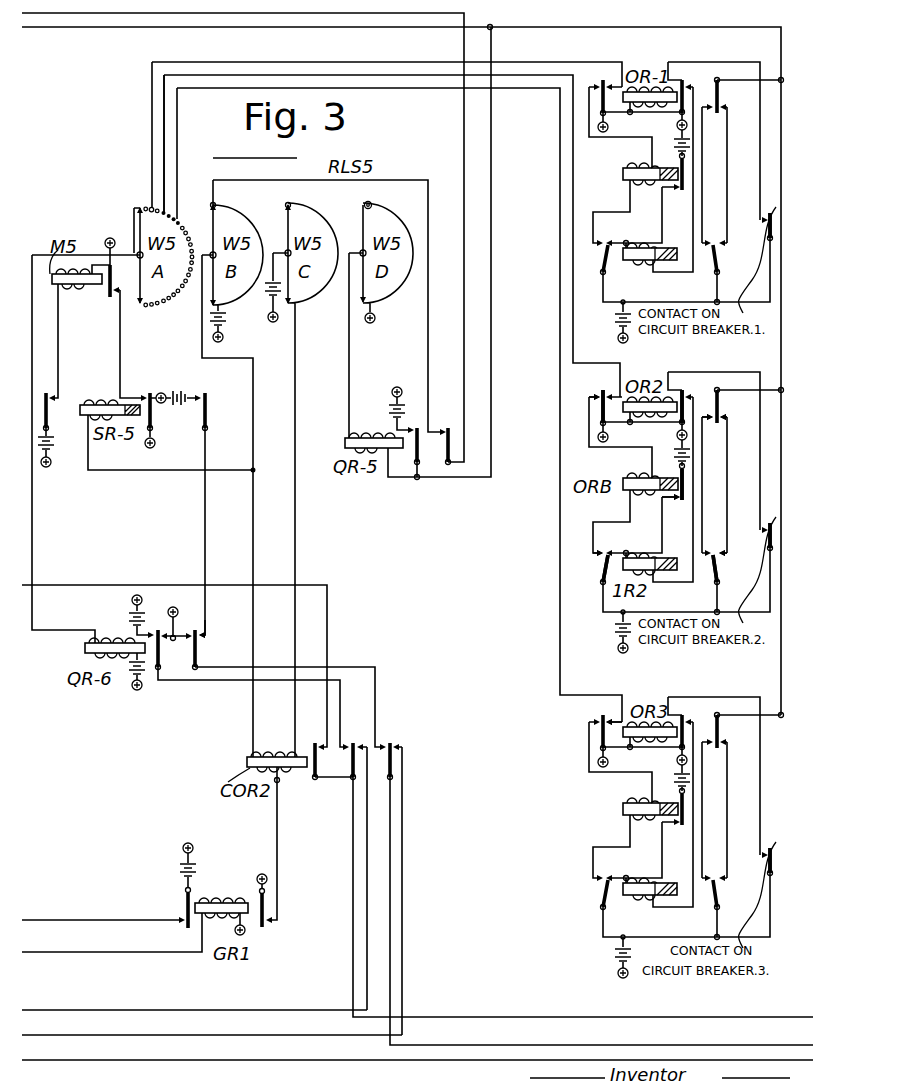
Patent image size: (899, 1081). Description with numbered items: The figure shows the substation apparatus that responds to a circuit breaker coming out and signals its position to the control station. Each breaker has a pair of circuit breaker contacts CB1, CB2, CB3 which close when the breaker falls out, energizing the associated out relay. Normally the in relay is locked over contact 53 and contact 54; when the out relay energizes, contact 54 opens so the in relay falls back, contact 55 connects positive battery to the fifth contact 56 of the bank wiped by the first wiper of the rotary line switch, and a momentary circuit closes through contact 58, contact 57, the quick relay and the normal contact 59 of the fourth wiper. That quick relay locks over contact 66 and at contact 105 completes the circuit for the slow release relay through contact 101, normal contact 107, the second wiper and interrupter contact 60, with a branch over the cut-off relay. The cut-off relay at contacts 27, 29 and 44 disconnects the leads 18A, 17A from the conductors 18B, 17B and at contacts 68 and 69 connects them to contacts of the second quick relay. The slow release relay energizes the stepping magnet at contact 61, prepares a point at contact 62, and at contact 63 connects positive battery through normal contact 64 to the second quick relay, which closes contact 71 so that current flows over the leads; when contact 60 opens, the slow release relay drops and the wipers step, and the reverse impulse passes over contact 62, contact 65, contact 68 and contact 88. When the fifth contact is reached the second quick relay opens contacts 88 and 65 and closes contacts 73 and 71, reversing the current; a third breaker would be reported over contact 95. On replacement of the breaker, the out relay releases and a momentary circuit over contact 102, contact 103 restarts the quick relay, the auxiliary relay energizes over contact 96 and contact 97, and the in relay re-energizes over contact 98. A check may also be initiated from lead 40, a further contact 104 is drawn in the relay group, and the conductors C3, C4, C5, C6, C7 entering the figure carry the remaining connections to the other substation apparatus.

The normal contact 64 is at (136, 207).
The fifth contact 56 is at (168, 212).
The normal contact 107 is at (290, 204).
The normal contact 59 is at (370, 205).
The interrupter contact 60 is at (114, 292).
The contact 61 is at (52, 398).
The contact 63 is at (142, 396).
The contact 62 is at (200, 397).
The contact 66 is at (408, 430).
The contact 105 is at (441, 432).
The contact 73 is at (151, 634).
The contact 71 is at (190, 635).
The contact 65 is at (202, 637).
The contact 88 is at (177, 650).
The contact 44 is at (318, 744).
The contact 69 is at (334, 768).
The contact 29 is at (357, 733).
The contact 68 is at (390, 745).
The contact 27 is at (398, 748).
The contact 101 is at (183, 918).
The armature 104 is at (268, 926).
The contact 96 is at (596, 396).
The contact 55 is at (614, 395).
The contact 54 is at (686, 392).
The contact 57 is at (708, 415).
The contact 103 is at (722, 413).
The contact 98 is at (674, 494).
The contact 53 is at (611, 553).
The contact 97 is at (598, 551).
The contact 58 is at (713, 553).
The contact 102 is at (722, 553).
The contact 95 is at (620, 721).
The lead 40 is at (213, 1060).
The lead 18A is at (675, 1008).
The lead 17A is at (735, 1008).
The conductor 18B is at (97, 1000).
The conductor 17B is at (175, 1003).
The conductor C3 is at (70, 13).
The conductor C4 is at (117, 30).
The conductor C5 is at (80, 578).
The conductor C6 is at (60, 910).
The conductor C7 is at (60, 944).
The circuit breaker contact CB1 is at (794, 214).
The circuit breaker contact CB2 is at (796, 526).
The circuit breaker contact CB3 is at (793, 857).